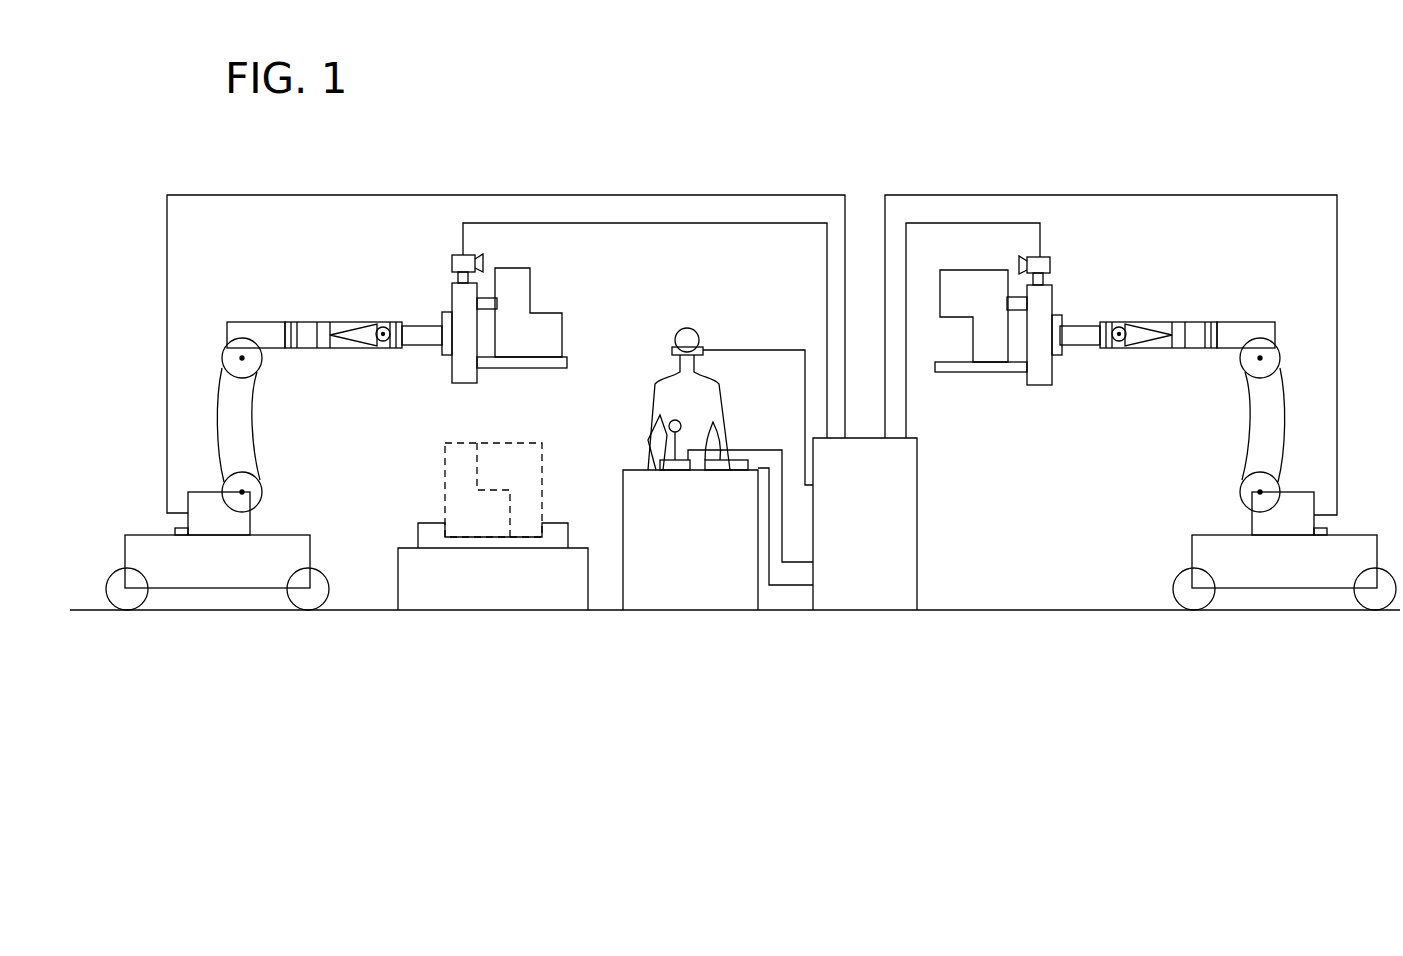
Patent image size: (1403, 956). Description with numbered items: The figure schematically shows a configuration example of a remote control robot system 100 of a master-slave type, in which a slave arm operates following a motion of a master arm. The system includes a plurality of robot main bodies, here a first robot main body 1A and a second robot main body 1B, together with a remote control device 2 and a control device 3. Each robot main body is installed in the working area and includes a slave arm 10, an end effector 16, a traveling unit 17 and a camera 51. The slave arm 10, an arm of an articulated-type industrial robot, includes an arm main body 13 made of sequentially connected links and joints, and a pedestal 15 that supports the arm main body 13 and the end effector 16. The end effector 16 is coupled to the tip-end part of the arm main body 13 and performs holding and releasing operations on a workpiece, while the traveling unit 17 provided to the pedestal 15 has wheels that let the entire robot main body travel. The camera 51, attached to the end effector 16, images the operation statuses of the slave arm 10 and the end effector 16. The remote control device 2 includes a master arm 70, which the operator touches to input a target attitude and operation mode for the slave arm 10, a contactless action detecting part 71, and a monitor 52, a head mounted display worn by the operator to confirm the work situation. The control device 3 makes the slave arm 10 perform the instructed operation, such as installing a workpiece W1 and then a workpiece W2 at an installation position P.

The remote control robot system 100 is at (1258, 138).
The first robot main body 1A is at (282, 303).
The second robot main body 1B is at (1233, 303).
The remote control device 2 is at (742, 324).
The control device 3 is at (866, 600).
The slave arm 10 is at (751, 461).
The arm main body 13 is at (245, 440).
The pedestal 15 is at (278, 548).
The end effector 16 is at (462, 380).
The traveling unit 17 is at (253, 590).
The camera 51 is at (452, 262).
The monitor 52 is at (668, 348).
The master arm 70 is at (675, 470).
The contactless action detecting part 71 is at (725, 470).
The installation position P is at (497, 530).
The workpiece W1 is at (552, 340).
The workpiece W2 is at (990, 340).